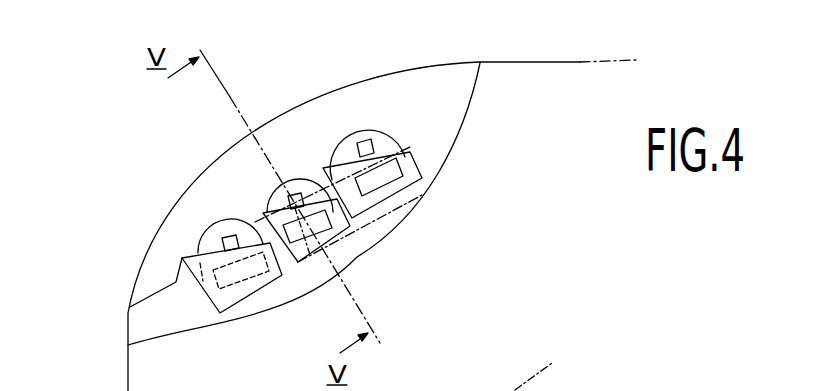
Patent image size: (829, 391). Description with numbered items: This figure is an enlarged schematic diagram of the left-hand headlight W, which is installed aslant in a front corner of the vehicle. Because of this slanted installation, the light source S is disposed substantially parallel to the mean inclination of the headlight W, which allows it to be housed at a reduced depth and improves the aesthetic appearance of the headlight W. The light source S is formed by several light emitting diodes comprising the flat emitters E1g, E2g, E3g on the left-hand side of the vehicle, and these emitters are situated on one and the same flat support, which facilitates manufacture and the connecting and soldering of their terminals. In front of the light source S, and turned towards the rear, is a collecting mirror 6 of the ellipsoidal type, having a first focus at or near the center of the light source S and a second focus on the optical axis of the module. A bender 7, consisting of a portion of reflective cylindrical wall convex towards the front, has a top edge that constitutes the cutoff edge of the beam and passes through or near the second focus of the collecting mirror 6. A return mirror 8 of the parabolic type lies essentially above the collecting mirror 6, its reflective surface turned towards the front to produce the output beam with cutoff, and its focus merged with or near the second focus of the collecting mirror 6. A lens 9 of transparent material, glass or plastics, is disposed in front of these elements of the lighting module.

The headlight W is at (128, 259).
The lens 9 is at (160, 250).
The return mirror 8 is at (130, 307).
The bender 7 is at (352, 263).
The collecting mirror 6 is at (184, 195).
The light source S is at (278, 196).
The flat emitter E1g is at (368, 142).
The flat emitter E2g is at (299, 196).
The flat emitter E3g is at (227, 236).